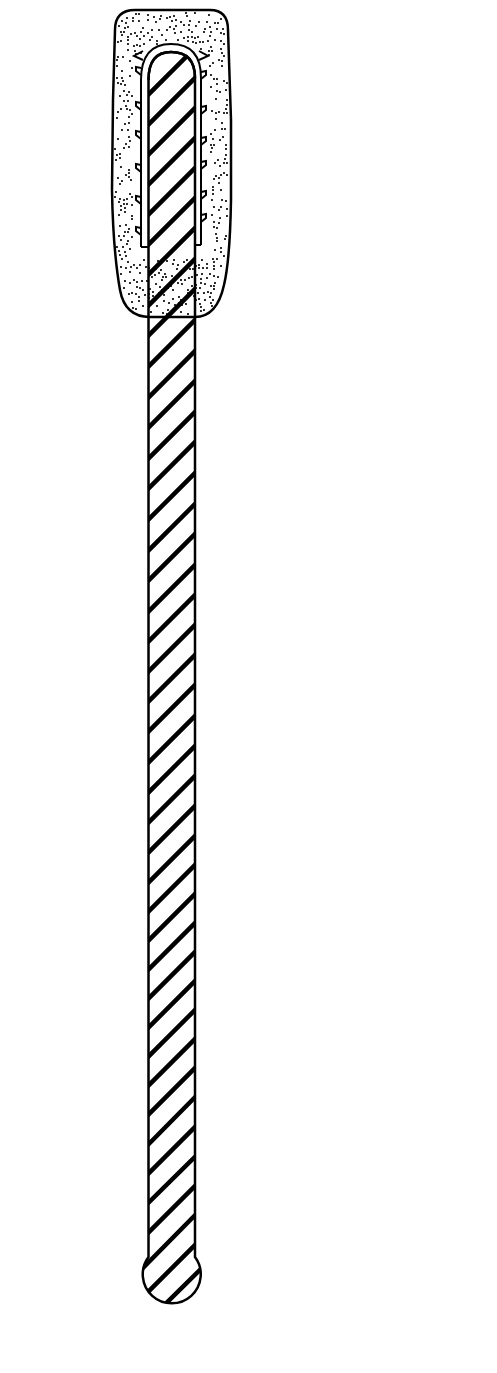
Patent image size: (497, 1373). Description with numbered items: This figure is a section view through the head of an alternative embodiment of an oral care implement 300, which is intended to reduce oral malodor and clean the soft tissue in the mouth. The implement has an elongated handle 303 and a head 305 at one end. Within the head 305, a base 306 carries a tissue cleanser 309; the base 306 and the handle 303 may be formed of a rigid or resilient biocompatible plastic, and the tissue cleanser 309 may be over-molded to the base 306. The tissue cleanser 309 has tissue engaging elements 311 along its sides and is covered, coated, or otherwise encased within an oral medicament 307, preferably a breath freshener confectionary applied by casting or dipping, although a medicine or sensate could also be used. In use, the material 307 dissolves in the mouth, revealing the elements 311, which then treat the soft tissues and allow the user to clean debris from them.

The oral care implement 300 is at (362, 77).
The handle 303 is at (195, 808).
The head 305 is at (104, 31).
The base 306 is at (184, 143).
The oral medicament 307 is at (230, 64).
The tissue cleanser 309 is at (204, 151).
The tissue engaging elements 311 is at (138, 133).